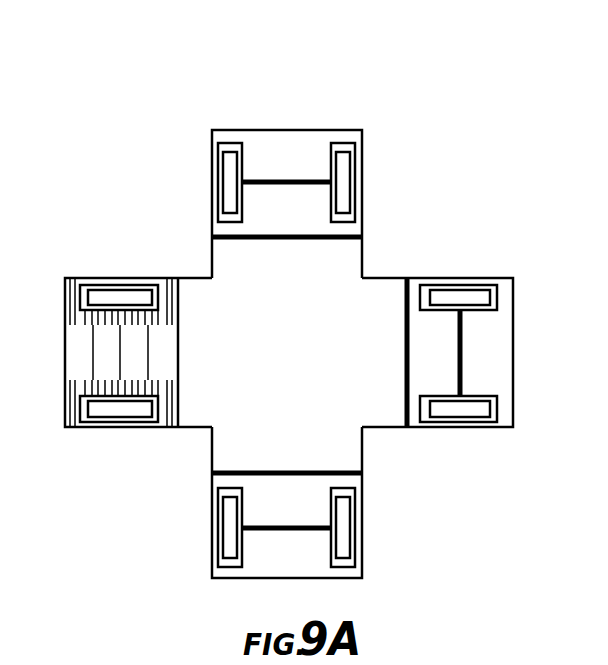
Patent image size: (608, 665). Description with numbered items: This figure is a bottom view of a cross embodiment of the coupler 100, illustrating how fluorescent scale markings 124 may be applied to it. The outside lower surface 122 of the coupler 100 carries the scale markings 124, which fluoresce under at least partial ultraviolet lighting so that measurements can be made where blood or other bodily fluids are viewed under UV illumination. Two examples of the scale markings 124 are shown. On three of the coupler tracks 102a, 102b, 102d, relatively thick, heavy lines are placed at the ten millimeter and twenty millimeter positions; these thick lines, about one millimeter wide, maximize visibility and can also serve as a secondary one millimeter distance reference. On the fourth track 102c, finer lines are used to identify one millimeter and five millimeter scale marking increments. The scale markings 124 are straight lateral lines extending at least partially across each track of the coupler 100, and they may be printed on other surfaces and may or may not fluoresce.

The coupler 100 is at (255, 68).
The coupler track 102a is at (376, 548).
The coupler track 102b is at (461, 262).
The coupler track 102c is at (121, 258).
The coupler track 102d is at (372, 142).
The outside lower surface 122 is at (312, 370).
The fluorescent scale markings 124 is at (305, 182).